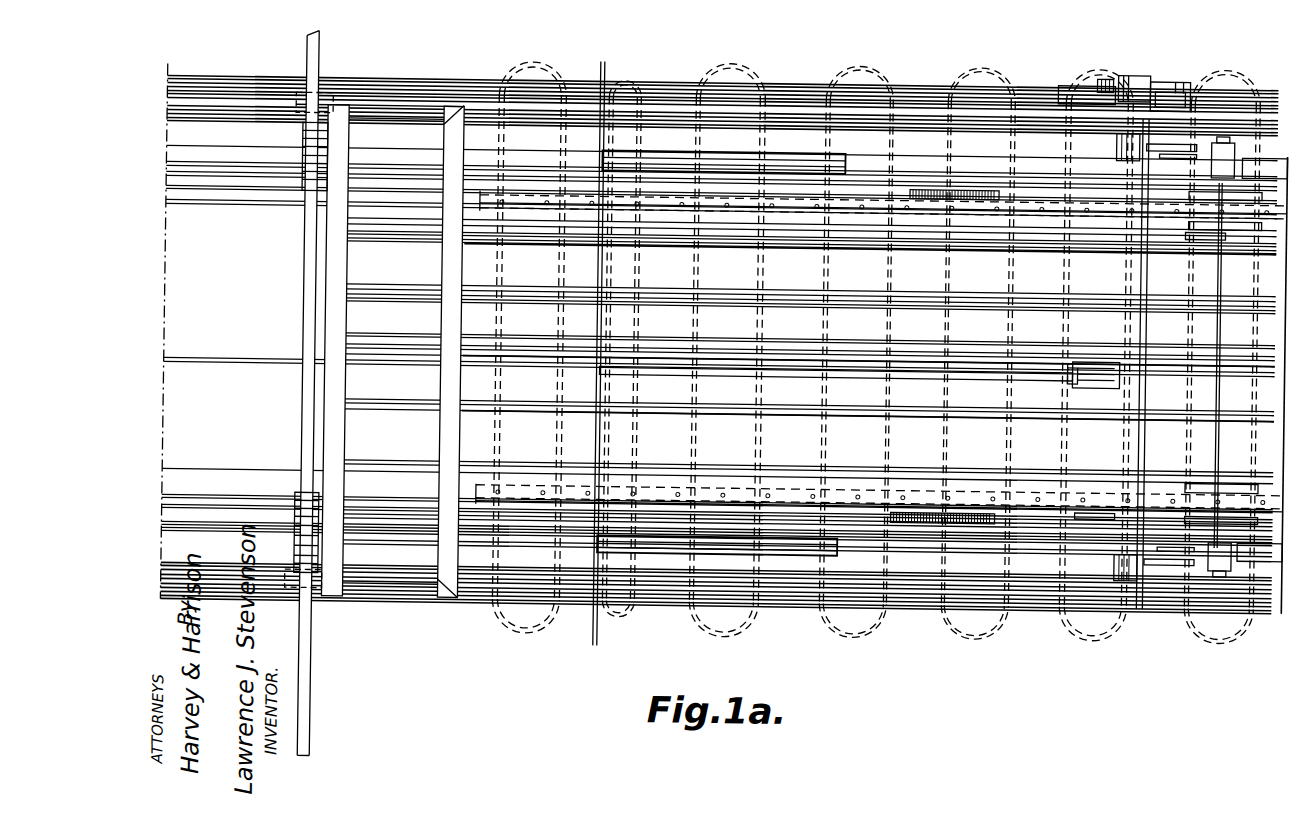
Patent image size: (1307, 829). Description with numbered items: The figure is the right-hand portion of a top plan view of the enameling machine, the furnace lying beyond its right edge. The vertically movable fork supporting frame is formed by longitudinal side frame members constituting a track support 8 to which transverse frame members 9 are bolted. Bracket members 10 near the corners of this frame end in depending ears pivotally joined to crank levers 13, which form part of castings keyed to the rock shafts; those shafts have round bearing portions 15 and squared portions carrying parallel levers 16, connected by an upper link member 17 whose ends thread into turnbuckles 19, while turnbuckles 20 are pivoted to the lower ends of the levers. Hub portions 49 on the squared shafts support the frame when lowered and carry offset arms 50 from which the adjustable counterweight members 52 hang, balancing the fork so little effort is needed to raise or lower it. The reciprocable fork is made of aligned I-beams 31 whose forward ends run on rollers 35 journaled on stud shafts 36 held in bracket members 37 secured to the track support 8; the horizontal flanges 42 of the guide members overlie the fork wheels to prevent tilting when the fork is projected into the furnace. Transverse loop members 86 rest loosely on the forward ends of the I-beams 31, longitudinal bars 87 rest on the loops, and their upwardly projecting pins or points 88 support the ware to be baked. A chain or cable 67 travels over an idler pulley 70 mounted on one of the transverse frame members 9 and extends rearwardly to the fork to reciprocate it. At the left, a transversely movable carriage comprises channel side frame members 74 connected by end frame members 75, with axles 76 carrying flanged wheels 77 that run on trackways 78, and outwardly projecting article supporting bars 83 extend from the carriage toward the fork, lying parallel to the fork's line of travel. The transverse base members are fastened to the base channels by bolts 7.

The bolts 7 is at (596, 100).
The track support 8 is at (930, 168).
The transverse frame members 9 is at (1147, 328).
The bracket members 10 is at (1168, 152).
The crank lever 13 is at (1180, 138).
The round bearing portions 15 is at (1140, 76).
The parallel levers 16 is at (1178, 92).
The upper link member 17 is at (935, 100).
The turnbuckles 19 is at (1176, 86).
The turnbuckles 20 is at (1108, 70).
The I-beams 31 is at (868, 212).
The rollers 35 is at (1200, 234).
The stud shafts 36 is at (1226, 134).
The bracket members 37 is at (1248, 162).
The horizontal flanges 42 is at (660, 168).
The hub portions 49 is at (1114, 145).
The offset arms 50 is at (1098, 516).
The counterweight members 52 is at (963, 186).
The chain or cable 67 is at (968, 368).
The idler pulley 70 is at (1072, 378).
The side frame members 74 is at (213, 110).
The end frame members 75 is at (448, 324).
The axles 76 is at (238, 170).
The flanged wheels 77 is at (305, 170).
The trackways 78 is at (305, 294).
The article supporting bars 83 is at (930, 246).
The loop members 86 is at (830, 86).
The bars 87 is at (808, 214).
The pins or points 88 is at (752, 214).